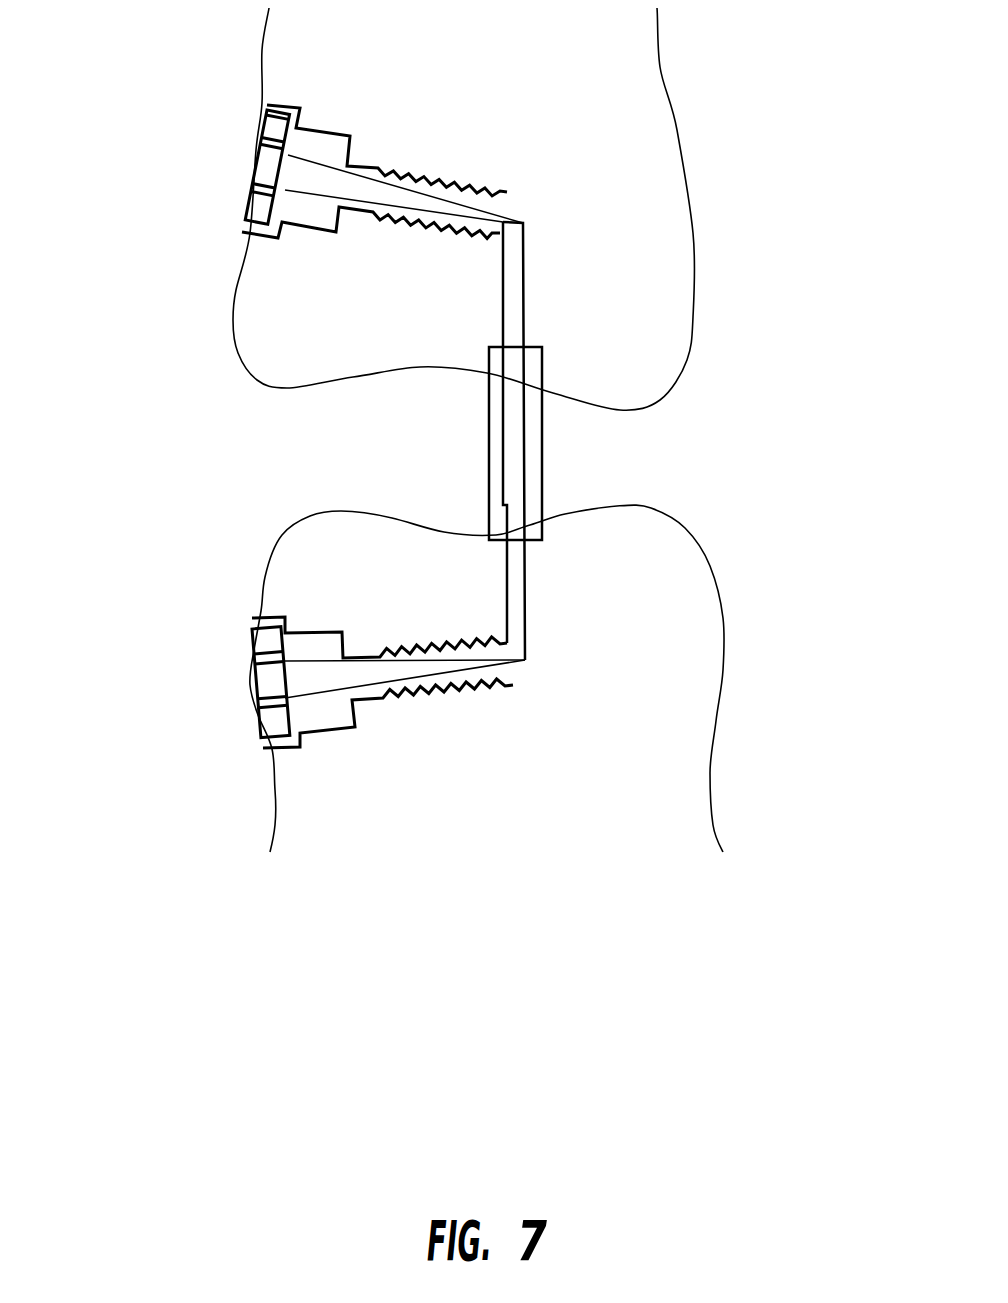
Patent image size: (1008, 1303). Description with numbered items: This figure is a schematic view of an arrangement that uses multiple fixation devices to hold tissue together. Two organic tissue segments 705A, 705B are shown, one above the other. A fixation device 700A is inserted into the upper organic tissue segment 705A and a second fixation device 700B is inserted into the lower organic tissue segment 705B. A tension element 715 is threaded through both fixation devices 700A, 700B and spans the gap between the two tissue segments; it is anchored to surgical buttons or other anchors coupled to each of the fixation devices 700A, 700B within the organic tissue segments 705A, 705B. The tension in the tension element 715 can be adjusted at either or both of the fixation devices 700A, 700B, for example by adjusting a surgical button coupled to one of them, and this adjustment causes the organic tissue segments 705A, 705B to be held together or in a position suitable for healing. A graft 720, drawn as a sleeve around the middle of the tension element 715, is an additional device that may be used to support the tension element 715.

The fixation device 700A is at (127, 165).
The fixation device 700B is at (123, 663).
The organic tissue segment 705A is at (792, 250).
The organic tissue segment 705B is at (833, 675).
The tension element 715 is at (375, 490).
The graft 720 is at (695, 475).